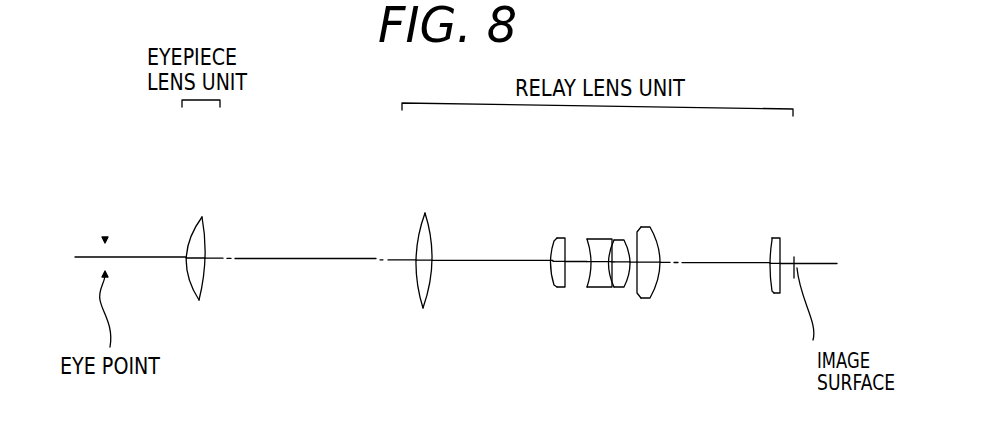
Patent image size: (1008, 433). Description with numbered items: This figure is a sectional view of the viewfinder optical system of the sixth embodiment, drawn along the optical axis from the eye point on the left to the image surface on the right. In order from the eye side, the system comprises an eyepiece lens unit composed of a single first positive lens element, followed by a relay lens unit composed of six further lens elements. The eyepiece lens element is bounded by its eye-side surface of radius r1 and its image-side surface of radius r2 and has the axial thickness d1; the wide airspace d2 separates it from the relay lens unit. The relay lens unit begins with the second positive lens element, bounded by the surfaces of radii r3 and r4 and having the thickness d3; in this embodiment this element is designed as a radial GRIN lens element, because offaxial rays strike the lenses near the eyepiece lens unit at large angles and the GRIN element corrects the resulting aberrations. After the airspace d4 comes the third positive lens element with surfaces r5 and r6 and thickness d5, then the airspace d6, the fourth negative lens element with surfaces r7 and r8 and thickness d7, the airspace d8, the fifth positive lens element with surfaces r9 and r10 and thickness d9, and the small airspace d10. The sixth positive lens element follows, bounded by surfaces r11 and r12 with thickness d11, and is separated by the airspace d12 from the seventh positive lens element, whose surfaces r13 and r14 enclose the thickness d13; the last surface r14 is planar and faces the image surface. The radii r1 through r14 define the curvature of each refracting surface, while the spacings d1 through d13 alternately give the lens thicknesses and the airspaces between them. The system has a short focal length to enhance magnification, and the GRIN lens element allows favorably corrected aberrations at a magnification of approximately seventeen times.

The radius of curvature of the eye-side surface of the first positive lens element r1 is at (197, 225).
The radius of curvature of the image-side surface of the first positive lens element r2 is at (207, 230).
The radius of curvature of the eye-side surface of the second positive lens element r3 is at (420, 222).
The radius of curvature of the image-side surface of the second positive lens elemen r4 is at (430, 228).
The radius of curvature of the eye-side surface of the third positive lens element r5 is at (552, 240).
The radius of curvature of the image-side surface of the third positive lens element r6 is at (567, 238).
The radius of curvature of the eye-side surface of the fourth negative lens element r7 is at (587, 240).
The radius of curvature of the image-side surface of the fourth negative lens elemen r8 is at (613, 238).
The radius of curvature of the eye-side surface of the fifth positive lens element r9 is at (613, 243).
The radius of curvature of the image-side surface of the fifth positive lens element r10 is at (630, 240).
The radius of curvature of the eye-side surface of the sixth positive lens element r11 is at (636, 234).
The radius of curvature of the image-side surface of the sixth positive lens element r12 is at (659, 240).
The radius of curvature of the eye-side surface of the seventh positive lens element r13 is at (772, 240).
The radius of curvature of the image-side surface of the seventh positive lens eleme r14 is at (783, 240).
The thickness of the first positive lens element d1 is at (196, 298).
The airspace between the first and second lens elements d2 is at (310, 260).
The thickness of the second positive lens element d3 is at (415, 304).
The airspace between the second and third lens elements d4 is at (493, 262).
The thickness of the third positive lens element d5 is at (553, 288).
The airspace between the third and fourth lens elements d6 is at (575, 268).
The thickness of the fourth negative lens element d7 is at (598, 289).
The airspace between the fourth and fifth lens elements d8 is at (609, 288).
The thickness of the fifth positive lens element d9 is at (622, 288).
The airspace between the fifth and sixth lens elements d10 is at (633, 270).
The thickness of the sixth positive lens element d11 is at (655, 291).
The airspace between the sixth and seventh lens elements d12 is at (715, 266).
The thickness of the seventh positive lens element d13 is at (773, 294).